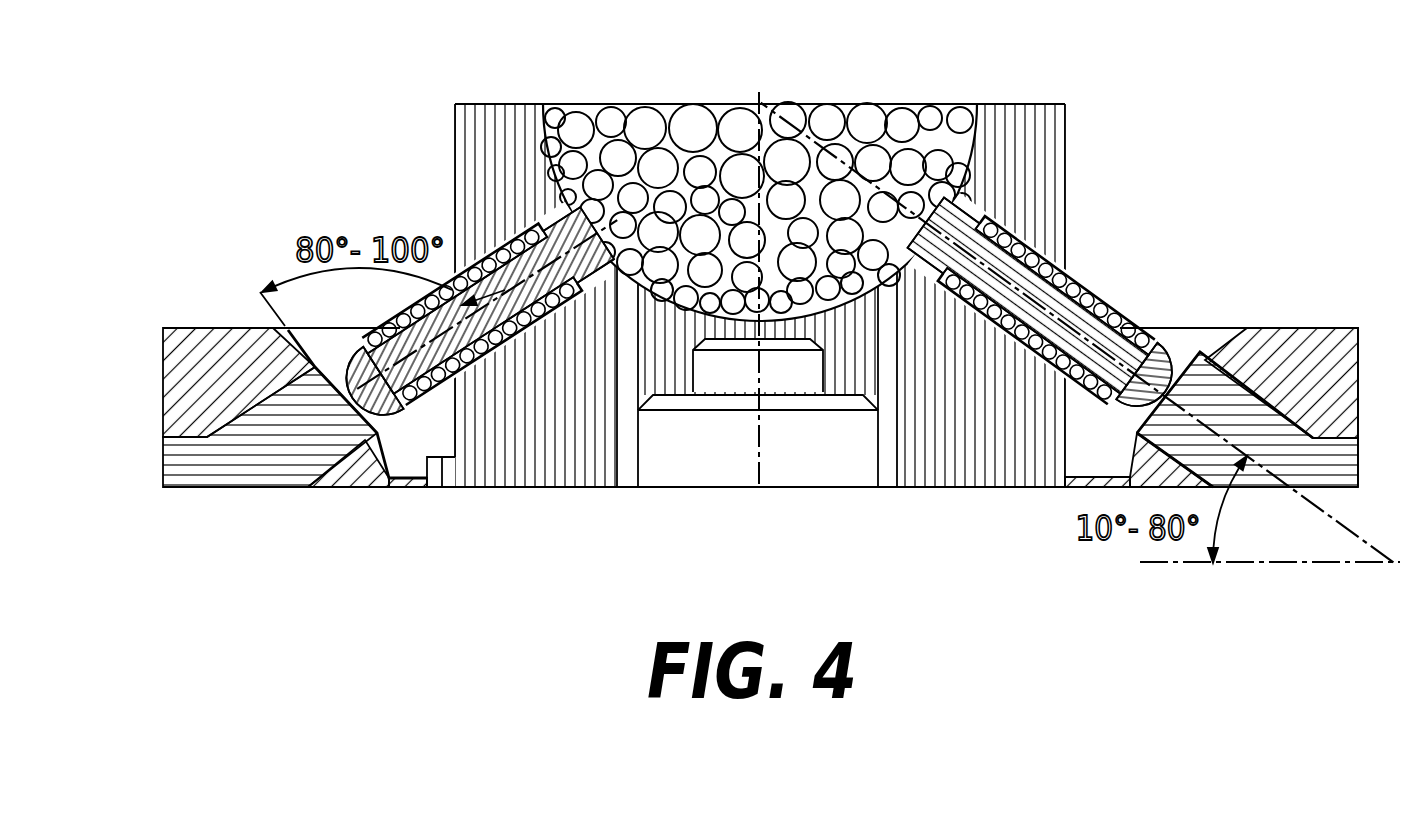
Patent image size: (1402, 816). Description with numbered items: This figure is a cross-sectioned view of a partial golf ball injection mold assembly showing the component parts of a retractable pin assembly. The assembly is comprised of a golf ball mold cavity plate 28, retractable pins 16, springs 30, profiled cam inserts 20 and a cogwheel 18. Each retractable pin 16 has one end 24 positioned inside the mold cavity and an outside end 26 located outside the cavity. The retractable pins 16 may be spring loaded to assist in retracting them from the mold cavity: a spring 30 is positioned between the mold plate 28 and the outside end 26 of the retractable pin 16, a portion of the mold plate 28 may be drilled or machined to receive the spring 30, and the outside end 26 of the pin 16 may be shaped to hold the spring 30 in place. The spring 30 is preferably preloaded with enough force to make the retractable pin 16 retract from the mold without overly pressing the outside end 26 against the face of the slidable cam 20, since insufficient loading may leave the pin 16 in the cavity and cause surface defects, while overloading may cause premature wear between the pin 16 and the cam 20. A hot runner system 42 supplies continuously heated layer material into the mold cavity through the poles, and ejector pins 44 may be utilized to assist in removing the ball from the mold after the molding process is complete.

The retractable pin 16 is at (522, 273).
The cogwheel 18 is at (1302, 355).
The profiled cam insert 20 is at (257, 453).
The end of retractable pin 24 is at (604, 118).
The outside end of retractable pin 26 is at (387, 425).
The golf ball mold cavity plate 28 is at (1035, 157).
The spring 30 is at (436, 398).
The hot runner system 42 is at (775, 455).
The ejector pin 44 is at (631, 476).